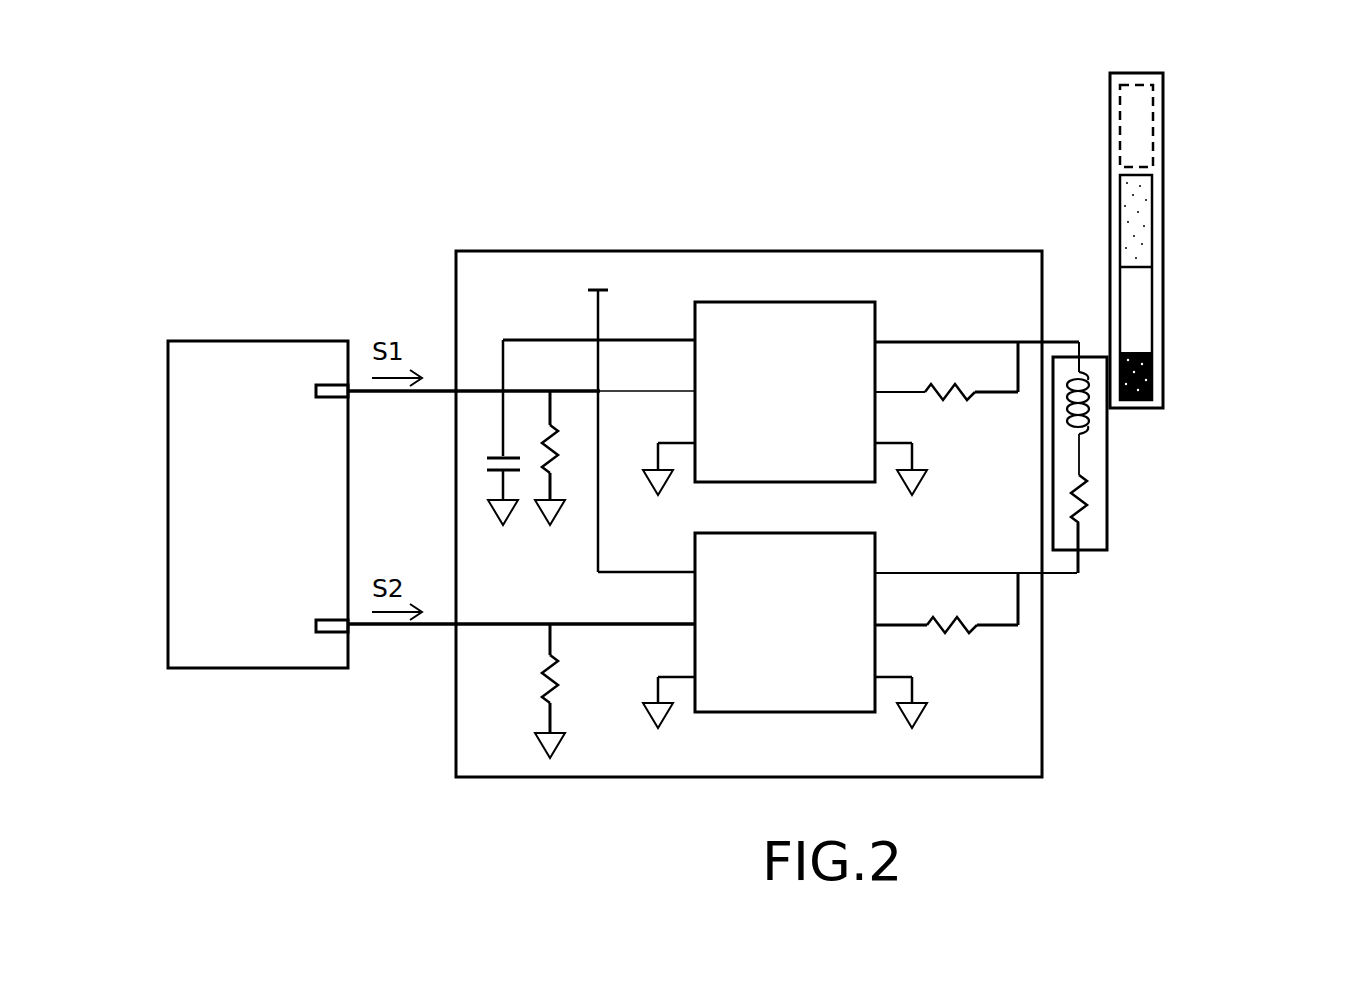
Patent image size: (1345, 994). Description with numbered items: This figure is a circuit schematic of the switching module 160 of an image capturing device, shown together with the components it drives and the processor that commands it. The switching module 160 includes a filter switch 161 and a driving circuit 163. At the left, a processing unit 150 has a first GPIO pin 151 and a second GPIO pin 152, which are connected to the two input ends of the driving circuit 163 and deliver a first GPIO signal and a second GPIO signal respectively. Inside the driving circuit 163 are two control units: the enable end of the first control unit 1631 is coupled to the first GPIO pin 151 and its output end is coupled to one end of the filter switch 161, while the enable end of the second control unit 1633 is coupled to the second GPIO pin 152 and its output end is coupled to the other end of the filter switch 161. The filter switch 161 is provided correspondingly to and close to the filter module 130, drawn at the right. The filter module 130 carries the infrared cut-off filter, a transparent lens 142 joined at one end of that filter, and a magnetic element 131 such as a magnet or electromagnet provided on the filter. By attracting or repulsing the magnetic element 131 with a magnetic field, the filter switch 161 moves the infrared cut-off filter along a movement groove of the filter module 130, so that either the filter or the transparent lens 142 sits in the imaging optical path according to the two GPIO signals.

The filter module 130 is at (1163, 88).
The transparent lens 142 is at (1150, 232).
The magnetic element 131 is at (1150, 362).
The processing unit 150 is at (229, 563).
The first GPIO pin 151 is at (316, 390).
The second GPIO pin 152 is at (316, 627).
The switching module 160 is at (1172, 602).
The filter switch 161 is at (1098, 551).
The driving circuit 163 is at (1043, 695).
The first control unit 1631 is at (748, 450).
The second control unit 1633 is at (748, 681).